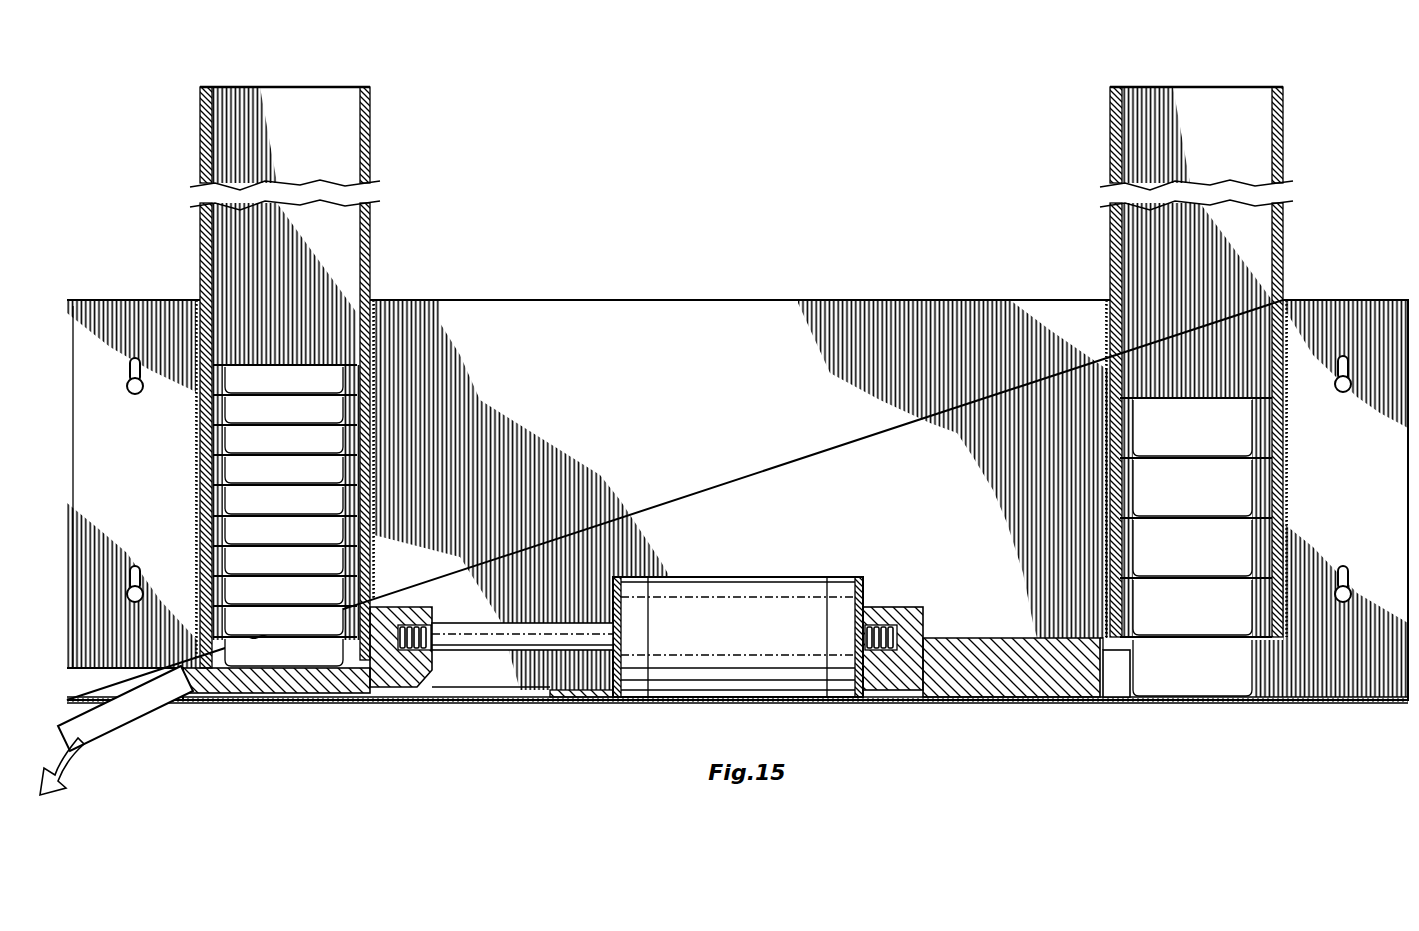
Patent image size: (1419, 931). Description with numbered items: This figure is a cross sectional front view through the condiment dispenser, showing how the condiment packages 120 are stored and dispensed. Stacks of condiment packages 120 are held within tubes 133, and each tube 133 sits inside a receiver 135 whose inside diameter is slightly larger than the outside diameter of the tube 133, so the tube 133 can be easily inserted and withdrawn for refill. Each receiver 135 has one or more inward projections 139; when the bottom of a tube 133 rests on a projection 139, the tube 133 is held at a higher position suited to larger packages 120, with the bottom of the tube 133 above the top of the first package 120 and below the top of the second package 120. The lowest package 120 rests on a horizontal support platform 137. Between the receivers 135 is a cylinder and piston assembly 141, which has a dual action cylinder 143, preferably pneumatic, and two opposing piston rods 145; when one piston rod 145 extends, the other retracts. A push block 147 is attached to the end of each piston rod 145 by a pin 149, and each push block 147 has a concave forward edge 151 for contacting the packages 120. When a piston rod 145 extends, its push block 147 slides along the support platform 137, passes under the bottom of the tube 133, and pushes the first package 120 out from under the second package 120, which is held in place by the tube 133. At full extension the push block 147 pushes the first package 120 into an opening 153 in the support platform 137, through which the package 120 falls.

The condiment packages 120 is at (290, 655).
The tube 133 is at (370, 123).
The receiver 135 is at (374, 325).
The horizontal support platform 137 is at (505, 703).
The inward projection 139 is at (350, 635).
The cylinder and piston assembly 141 is at (664, 708).
The dual action cylinder 143 is at (752, 580).
The piston rod 145 is at (462, 625).
The push block 147 is at (210, 690).
The pin 149 is at (415, 652).
The concave forward edge 151 is at (1118, 675).
The opening 153 is at (1290, 701).